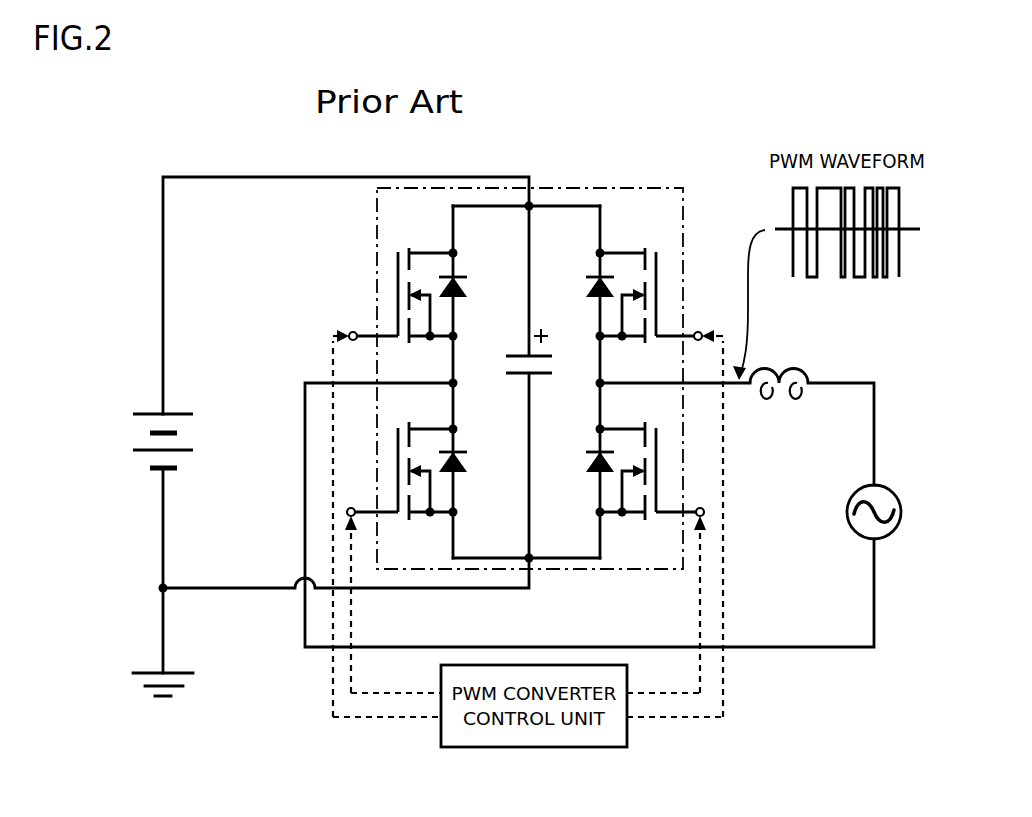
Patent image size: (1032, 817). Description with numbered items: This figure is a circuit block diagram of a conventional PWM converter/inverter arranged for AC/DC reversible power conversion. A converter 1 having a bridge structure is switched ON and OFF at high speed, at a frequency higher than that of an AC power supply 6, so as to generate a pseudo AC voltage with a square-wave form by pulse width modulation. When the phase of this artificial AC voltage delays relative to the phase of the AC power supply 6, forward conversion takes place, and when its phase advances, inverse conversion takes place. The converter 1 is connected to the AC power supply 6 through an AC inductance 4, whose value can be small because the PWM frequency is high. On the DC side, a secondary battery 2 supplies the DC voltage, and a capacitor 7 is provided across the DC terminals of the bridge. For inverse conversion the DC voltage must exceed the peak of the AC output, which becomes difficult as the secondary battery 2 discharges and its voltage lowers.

The converter 1 is at (560, 188).
The secondary battery 2 is at (198, 434).
The AC inductance 4 is at (806, 373).
The AC power supply 6 is at (846, 514).
The capacitor 7 is at (538, 382).